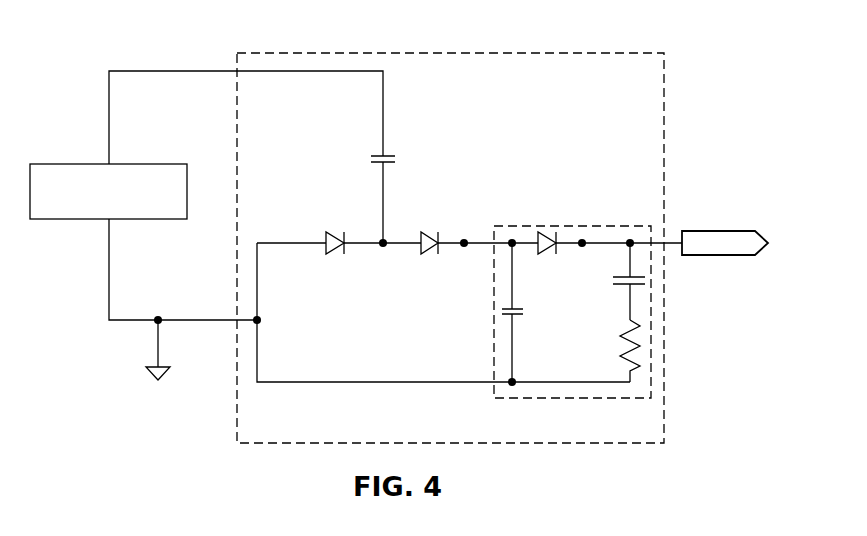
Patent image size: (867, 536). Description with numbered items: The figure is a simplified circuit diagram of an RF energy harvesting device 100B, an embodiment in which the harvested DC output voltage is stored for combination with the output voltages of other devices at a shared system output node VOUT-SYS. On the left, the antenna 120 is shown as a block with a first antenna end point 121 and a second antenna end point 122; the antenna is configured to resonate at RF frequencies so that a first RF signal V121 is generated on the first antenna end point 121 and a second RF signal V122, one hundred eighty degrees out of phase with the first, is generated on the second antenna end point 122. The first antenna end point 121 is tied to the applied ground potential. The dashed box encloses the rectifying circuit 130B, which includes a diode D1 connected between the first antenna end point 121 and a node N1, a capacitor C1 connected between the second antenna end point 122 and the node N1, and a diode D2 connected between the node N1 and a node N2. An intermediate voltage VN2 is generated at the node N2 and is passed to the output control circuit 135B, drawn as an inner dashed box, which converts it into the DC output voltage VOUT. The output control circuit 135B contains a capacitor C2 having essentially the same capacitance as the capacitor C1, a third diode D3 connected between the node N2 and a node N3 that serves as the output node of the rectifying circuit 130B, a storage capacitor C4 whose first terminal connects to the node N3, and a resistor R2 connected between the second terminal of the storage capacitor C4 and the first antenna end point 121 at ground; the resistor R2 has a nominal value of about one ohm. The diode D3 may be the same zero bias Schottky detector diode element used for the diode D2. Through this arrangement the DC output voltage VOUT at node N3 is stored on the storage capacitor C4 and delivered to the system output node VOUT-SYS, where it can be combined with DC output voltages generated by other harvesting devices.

The RF energy harvesting device 100B is at (126, 36).
The antenna 120 is at (181, 185).
The first antenna end point 121 is at (109, 229).
The second antenna end point 122 is at (109, 148).
The rectifying circuit 130B is at (459, 248).
The output control circuit 135B is at (568, 226).
The capacitor C1 is at (380, 153).
The second capacitor C2 is at (525, 313).
The storage capacitor C4 is at (628, 287).
The diode D1 is at (335, 235).
The diode D2 is at (428, 255).
The third diode D3 is at (547, 255).
The resistor R2 is at (622, 350).
The node N1 is at (385, 240).
The second node N2 is at (467, 240).
The node N3 is at (584, 240).
The first RF signal V121 is at (109, 247).
The second RF signal V122 is at (109, 125).
The intermediate voltage VN2 is at (466, 247).
The DC output voltage VOUT is at (663, 243).
The system output node VOUT-SYS is at (725, 243).